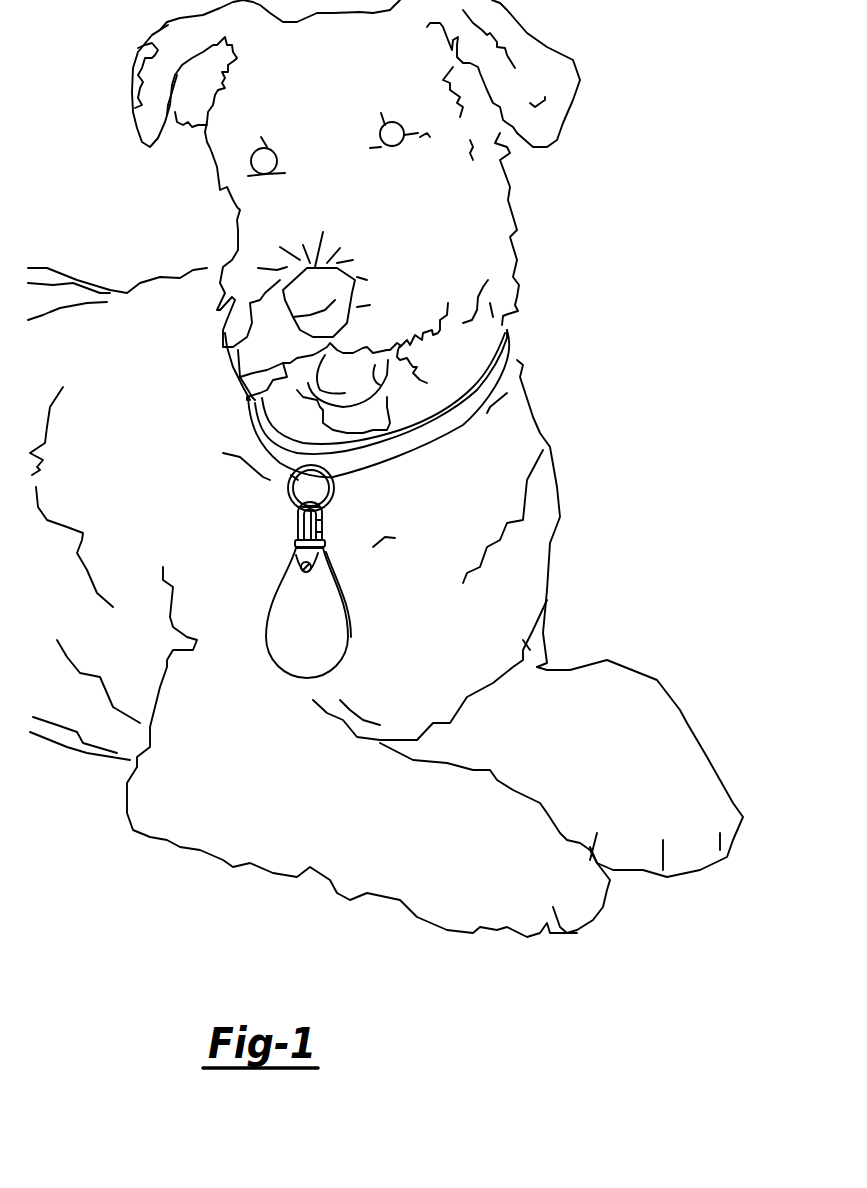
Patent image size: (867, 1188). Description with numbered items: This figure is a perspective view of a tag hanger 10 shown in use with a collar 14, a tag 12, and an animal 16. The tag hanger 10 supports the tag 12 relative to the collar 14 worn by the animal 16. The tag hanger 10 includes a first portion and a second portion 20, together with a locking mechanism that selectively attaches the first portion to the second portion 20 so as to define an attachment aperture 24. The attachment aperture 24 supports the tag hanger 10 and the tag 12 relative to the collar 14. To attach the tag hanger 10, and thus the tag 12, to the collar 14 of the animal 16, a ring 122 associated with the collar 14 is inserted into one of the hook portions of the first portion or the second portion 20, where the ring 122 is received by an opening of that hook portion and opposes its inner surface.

The tag hanger 10 is at (336, 512).
The tag 12 is at (362, 624).
The collar 14 is at (518, 338).
The animal 16 is at (510, 193).
The second portion 20 is at (285, 544).
The attachment aperture 24 is at (297, 527).
The ring 122 is at (283, 490).